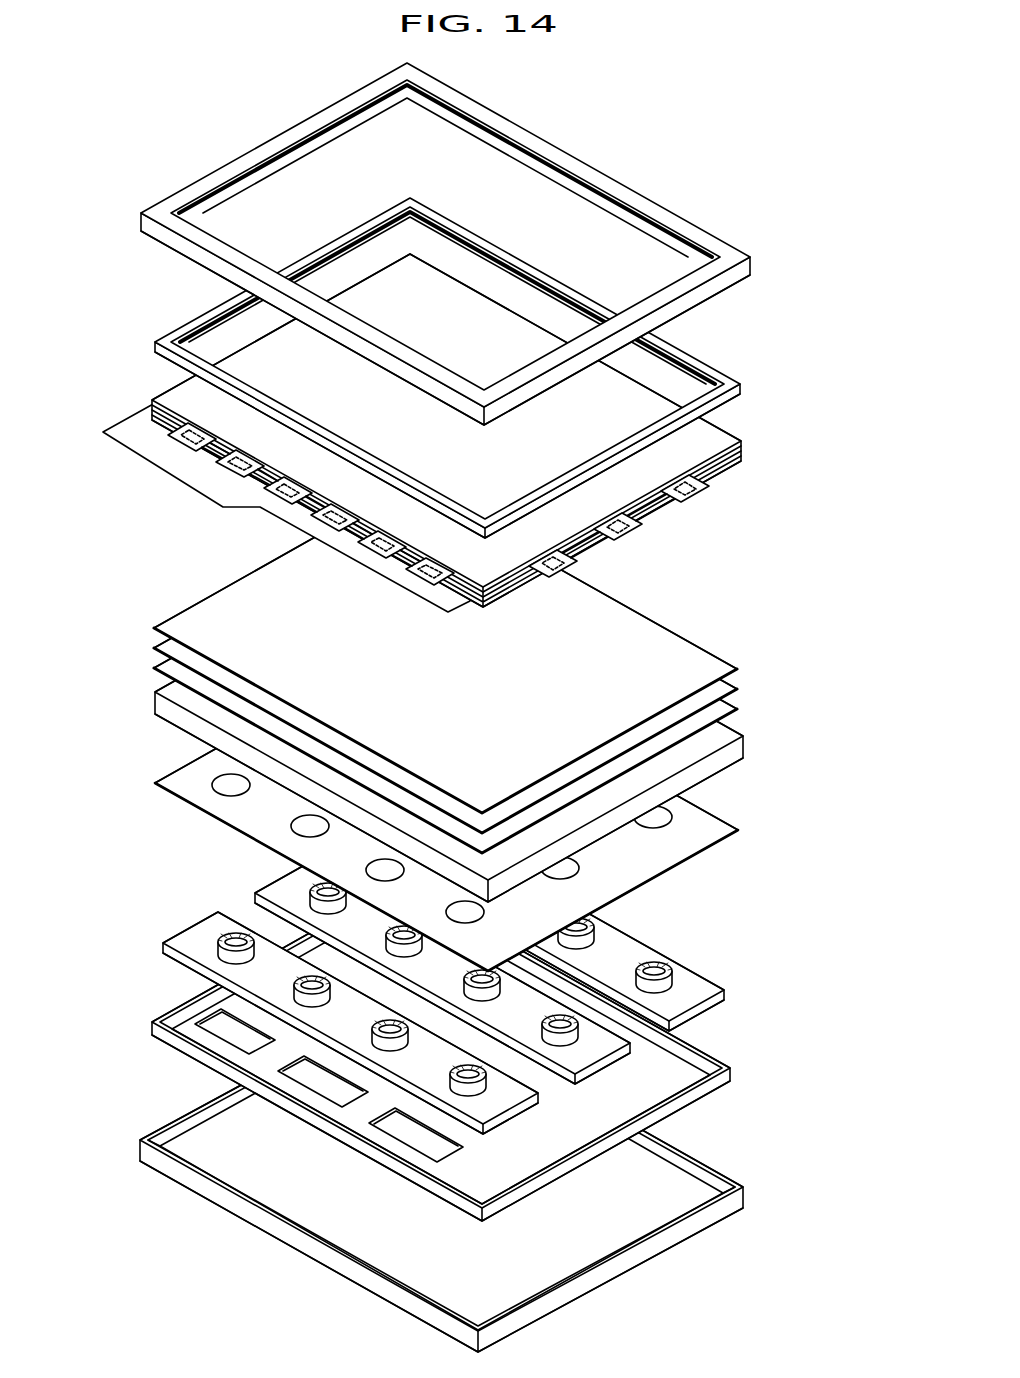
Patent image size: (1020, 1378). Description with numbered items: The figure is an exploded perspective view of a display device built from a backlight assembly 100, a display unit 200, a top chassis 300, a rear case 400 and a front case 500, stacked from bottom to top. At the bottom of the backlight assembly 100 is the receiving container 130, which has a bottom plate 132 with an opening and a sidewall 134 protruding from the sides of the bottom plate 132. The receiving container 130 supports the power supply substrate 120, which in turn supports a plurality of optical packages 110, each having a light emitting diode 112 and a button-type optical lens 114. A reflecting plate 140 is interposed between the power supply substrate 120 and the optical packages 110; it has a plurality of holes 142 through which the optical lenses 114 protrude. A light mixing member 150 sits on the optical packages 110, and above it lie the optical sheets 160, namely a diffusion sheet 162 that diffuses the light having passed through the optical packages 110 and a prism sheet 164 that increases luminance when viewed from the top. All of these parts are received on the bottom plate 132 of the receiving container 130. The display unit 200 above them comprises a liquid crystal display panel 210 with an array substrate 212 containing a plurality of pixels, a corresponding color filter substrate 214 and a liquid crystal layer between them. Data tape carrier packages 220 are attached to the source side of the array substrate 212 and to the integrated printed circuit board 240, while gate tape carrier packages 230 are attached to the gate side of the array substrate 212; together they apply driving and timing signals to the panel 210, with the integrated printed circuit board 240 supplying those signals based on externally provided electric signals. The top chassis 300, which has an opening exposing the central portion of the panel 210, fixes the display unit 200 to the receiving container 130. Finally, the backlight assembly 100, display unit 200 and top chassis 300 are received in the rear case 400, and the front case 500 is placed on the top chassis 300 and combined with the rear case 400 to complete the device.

The backlight assembly 100 is at (531, 860).
The optical package 110 is at (504, 971).
The light emitting diode 112 is at (724, 994).
The optical lens 114 is at (674, 975).
The power supply substrate 120 is at (686, 1004).
The receiving container 130 is at (480, 1059).
The bottom plate 132 is at (522, 1158).
The sidewall 134 is at (583, 1155).
The reflecting plate 140 is at (481, 806).
The holes 142 is at (668, 815).
The light mixing member 150 is at (744, 752).
The optical sheets 160 is at (503, 668).
The diffusion sheet 162 is at (737, 712).
The prism sheet 164 is at (737, 672).
The display unit 200 is at (434, 433).
The liquid crystal display panel 210 is at (501, 430).
The array substrate 212 is at (742, 458).
The color filter substrate 214 is at (714, 436).
The data tape carrier package 220 is at (150, 413).
The gate tape carrier package 230 is at (709, 494).
The integrated printed circuit board 240 is at (104, 435).
The top chassis 300 is at (176, 300).
The rear case 400 is at (165, 1103).
The front case 500 is at (170, 178).